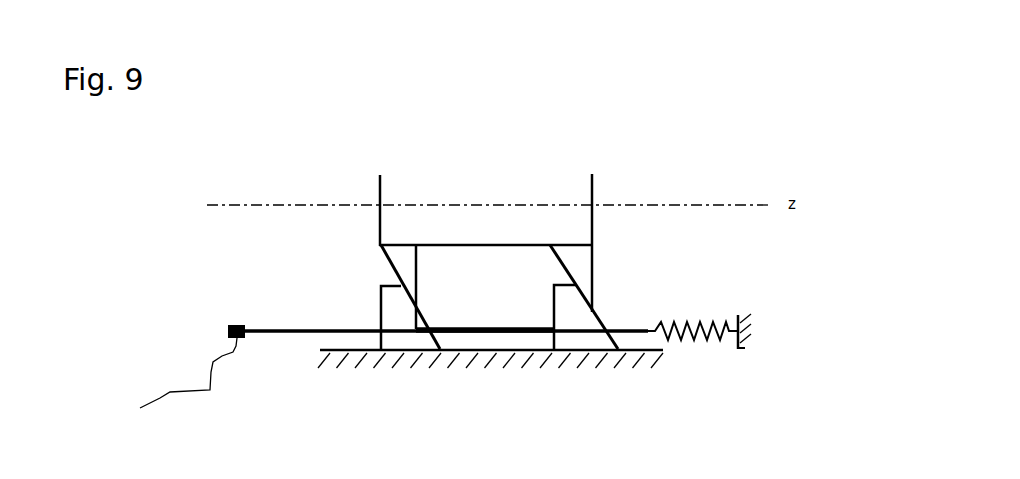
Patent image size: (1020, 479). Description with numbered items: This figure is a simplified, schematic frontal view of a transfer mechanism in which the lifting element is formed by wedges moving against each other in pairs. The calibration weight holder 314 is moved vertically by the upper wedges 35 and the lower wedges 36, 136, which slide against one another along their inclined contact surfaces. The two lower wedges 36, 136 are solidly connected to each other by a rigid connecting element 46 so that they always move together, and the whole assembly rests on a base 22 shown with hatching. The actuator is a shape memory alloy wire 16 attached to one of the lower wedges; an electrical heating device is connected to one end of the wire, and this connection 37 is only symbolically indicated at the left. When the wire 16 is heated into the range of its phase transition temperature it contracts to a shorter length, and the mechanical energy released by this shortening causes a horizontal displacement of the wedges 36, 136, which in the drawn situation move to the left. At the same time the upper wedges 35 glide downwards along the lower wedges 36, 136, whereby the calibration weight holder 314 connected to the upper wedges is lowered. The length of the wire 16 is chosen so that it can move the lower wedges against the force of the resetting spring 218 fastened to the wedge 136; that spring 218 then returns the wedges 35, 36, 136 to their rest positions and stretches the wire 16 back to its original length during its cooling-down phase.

The SMA wire 16 is at (303, 328).
The base support 22 is at (650, 361).
The upper wedges 35 is at (388, 262).
The lower wedge 36 is at (410, 337).
The connection 37 is at (210, 401).
The rigid connecting element 46 is at (503, 334).
The lower wedge 136 is at (578, 332).
The resetting spring 218 is at (695, 318).
The calibration weight holder 314 is at (573, 215).